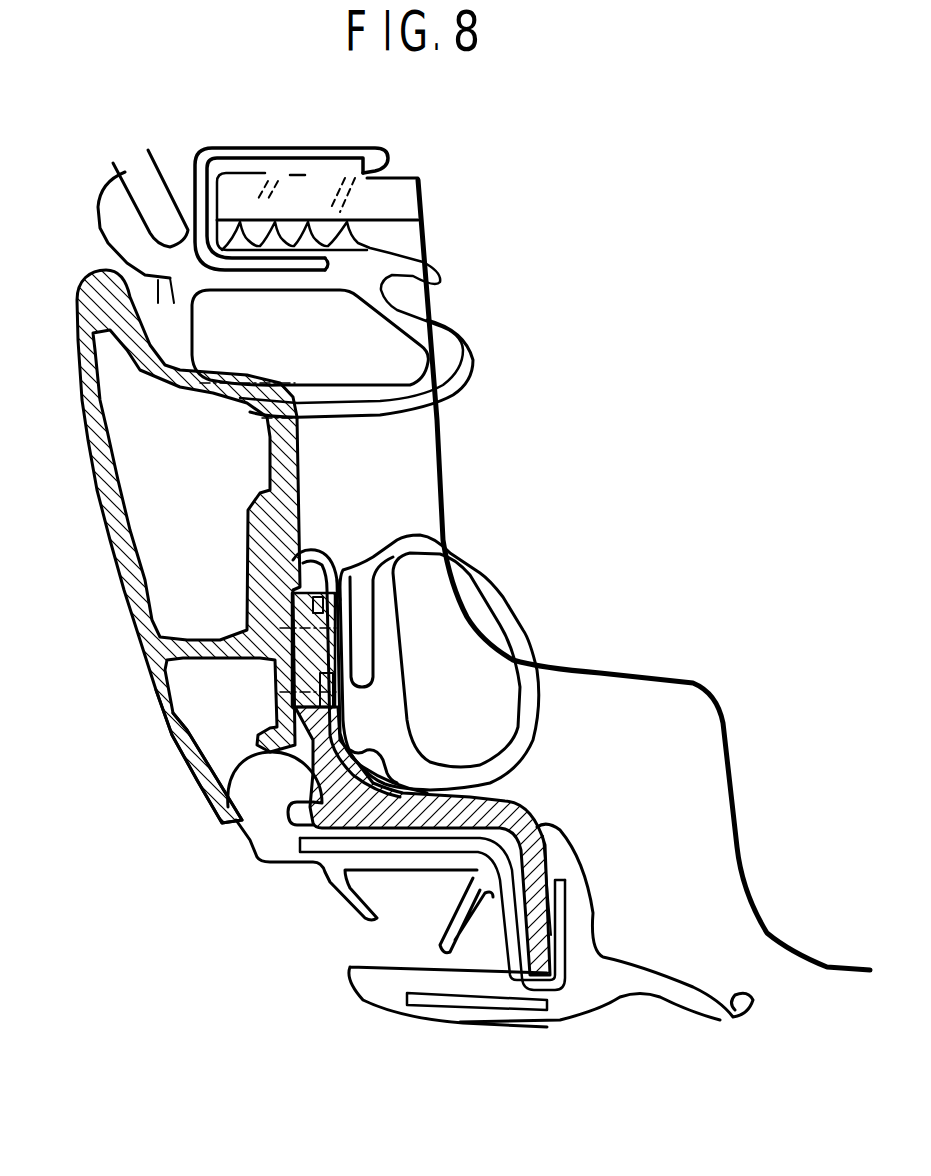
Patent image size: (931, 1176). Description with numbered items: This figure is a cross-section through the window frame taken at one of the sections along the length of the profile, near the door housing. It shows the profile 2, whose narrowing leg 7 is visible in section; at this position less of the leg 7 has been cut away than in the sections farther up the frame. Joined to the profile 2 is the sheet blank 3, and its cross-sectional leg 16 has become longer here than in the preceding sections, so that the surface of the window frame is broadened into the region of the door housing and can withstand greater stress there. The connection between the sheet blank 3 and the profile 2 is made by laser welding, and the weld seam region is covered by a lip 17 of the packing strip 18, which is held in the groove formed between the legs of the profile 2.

The profile 2 is at (107, 585).
The sheet blank 3 is at (477, 807).
The leg 7 is at (202, 777).
The cross-sectional leg 16 is at (335, 717).
The lip 17 is at (320, 563).
The packing strip 18 is at (513, 623).